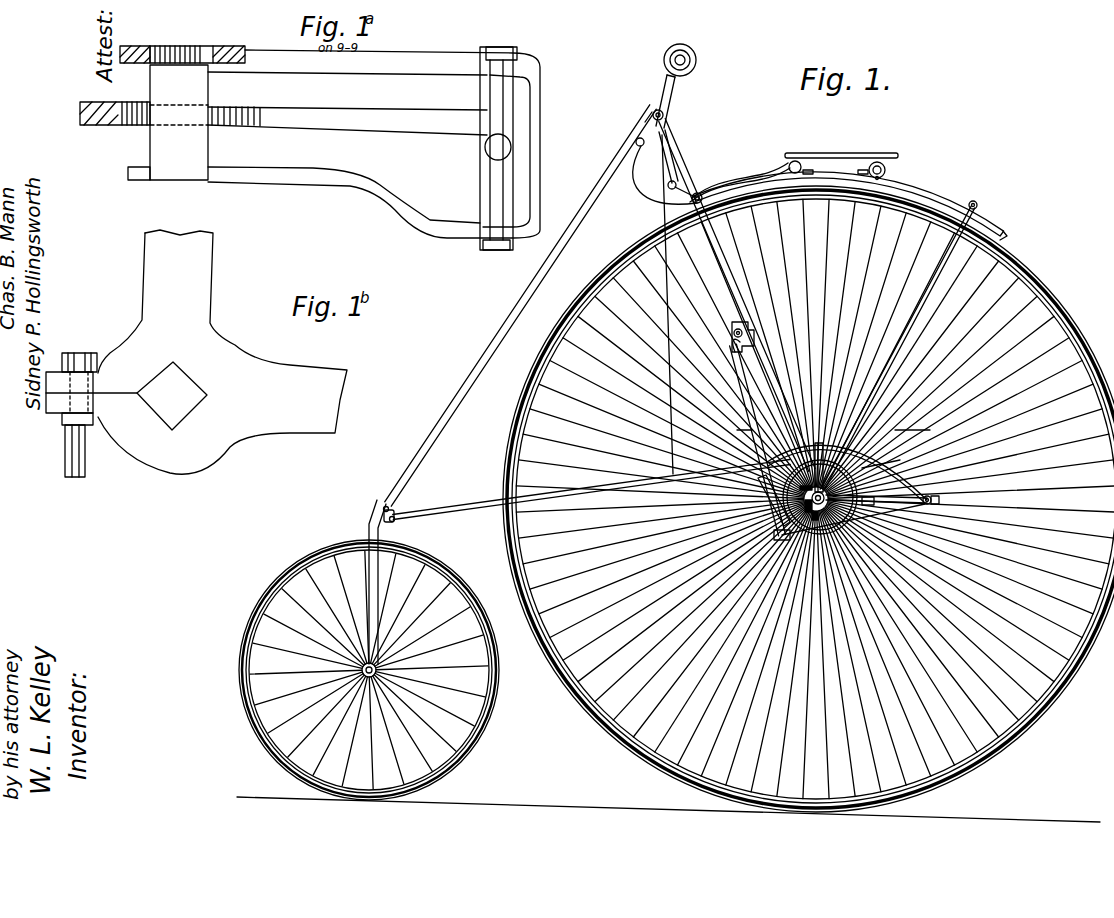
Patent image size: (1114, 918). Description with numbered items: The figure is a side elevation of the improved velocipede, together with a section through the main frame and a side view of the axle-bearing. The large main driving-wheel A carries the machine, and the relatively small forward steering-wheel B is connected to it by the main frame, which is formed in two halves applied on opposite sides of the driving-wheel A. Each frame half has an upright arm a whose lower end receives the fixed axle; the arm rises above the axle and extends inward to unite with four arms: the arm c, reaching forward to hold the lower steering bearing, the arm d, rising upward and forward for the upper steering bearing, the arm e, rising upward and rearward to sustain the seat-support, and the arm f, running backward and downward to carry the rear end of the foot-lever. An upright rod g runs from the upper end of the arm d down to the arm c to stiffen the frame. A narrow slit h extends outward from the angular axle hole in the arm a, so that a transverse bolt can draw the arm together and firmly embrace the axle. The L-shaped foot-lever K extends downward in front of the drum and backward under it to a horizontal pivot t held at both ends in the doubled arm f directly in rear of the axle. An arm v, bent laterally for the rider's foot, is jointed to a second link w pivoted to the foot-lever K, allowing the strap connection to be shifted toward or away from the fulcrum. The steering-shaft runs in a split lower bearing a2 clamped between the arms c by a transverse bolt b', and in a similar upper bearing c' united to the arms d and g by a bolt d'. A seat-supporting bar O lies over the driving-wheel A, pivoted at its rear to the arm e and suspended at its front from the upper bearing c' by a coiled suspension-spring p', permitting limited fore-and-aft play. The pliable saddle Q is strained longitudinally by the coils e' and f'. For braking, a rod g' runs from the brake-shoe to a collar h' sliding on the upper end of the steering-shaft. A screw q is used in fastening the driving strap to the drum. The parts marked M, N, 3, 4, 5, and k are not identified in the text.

In FIG. 1, the main driving-wheel A is at (808, 499).
In FIG. 1, the forward steering-wheel B is at (369, 670).
In FIG. 1, the backbone M is at (521, 305).
In FIG. 1, the handle knob N is at (689, 60).
In FIG. 1, the upright arm a is at (820, 488).
In FIG. 1a, the upright arm a is at (144, 122).
In FIG. 1b, the upright arm a is at (222, 352).
In FIG. 1, the sleeve or bearing a2 is at (383, 512).
In FIG. 1, the pivot bolts 3 is at (384, 508).
In FIG. 1, the transverse bolt b' is at (592, 490).
In FIG. 1, the collar h' is at (657, 92).
In FIG. 1, the steering pivot 4 is at (662, 104).
In FIG. 1, the transverse bolt d' is at (632, 104).
In FIG. 1, the upper bearing c' is at (625, 126).
In FIG. 1, the rod g' is at (737, 282).
In FIG. 1, the upright rod or arm g is at (659, 304).
In FIG. 1, the suspension-spring p' is at (684, 166).
In FIG. 1, the arm v is at (652, 210).
In FIG. 1b, the arm v is at (62, 438).
In FIG. 1, the coil f' is at (740, 175).
In FIG. 1, the saddle Q is at (841, 155).
In FIG. 1, the coil e' is at (892, 169).
In FIG. 1, the seat-supporting bar O is at (958, 200).
In FIG. 1, the back stay 5 is at (978, 214).
In FIG. 1, the foot-lever K is at (745, 404).
In FIG. 1a, the foot-lever K is at (270, 150).
In FIG. 1, the screw q is at (834, 431).
In FIG. 1, the arm d is at (814, 438).
In FIG. 1a, the arm d is at (160, 40).
In FIG. 1, the arm e is at (799, 458).
In FIG. 1a, the arm e is at (222, 42).
In FIG. 1, the arm c is at (816, 461).
In FIG. 1, the horizontal pivot t is at (933, 496).
In FIG. 1a, the horizontal pivot t is at (498, 148).
In FIG. 1, the arm f is at (881, 443).
In FIG. 1a, the arm f is at (374, 144).
In FIG. 1, the slit or opening h is at (866, 530).
In FIG. 1, the second link w is at (772, 520).
In FIG. 1b, the clamp plate k is at (112, 390).